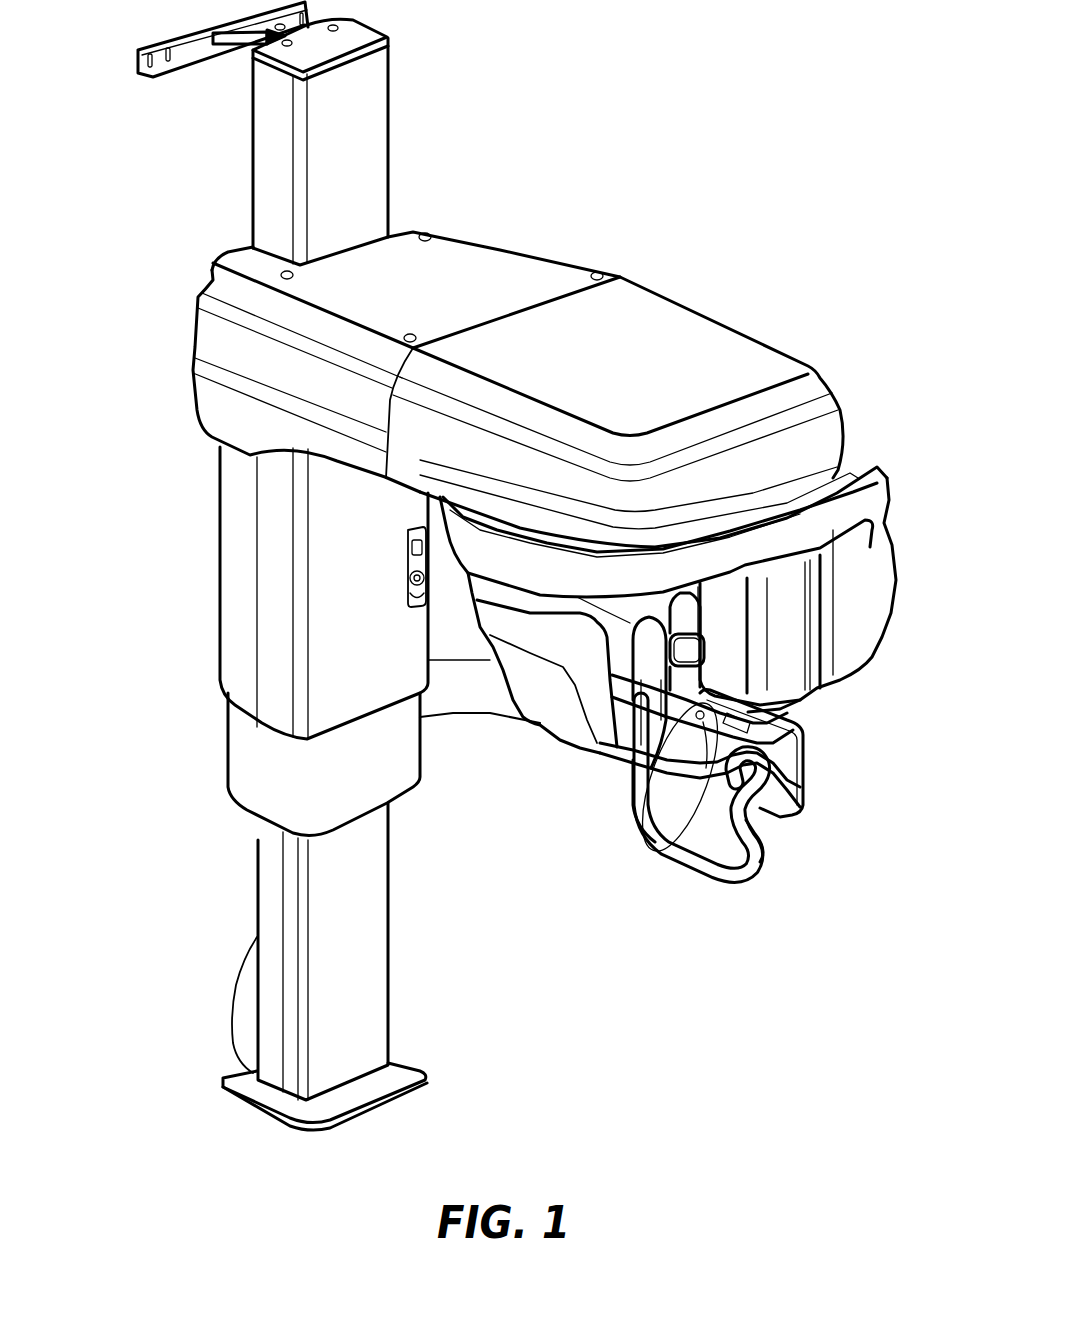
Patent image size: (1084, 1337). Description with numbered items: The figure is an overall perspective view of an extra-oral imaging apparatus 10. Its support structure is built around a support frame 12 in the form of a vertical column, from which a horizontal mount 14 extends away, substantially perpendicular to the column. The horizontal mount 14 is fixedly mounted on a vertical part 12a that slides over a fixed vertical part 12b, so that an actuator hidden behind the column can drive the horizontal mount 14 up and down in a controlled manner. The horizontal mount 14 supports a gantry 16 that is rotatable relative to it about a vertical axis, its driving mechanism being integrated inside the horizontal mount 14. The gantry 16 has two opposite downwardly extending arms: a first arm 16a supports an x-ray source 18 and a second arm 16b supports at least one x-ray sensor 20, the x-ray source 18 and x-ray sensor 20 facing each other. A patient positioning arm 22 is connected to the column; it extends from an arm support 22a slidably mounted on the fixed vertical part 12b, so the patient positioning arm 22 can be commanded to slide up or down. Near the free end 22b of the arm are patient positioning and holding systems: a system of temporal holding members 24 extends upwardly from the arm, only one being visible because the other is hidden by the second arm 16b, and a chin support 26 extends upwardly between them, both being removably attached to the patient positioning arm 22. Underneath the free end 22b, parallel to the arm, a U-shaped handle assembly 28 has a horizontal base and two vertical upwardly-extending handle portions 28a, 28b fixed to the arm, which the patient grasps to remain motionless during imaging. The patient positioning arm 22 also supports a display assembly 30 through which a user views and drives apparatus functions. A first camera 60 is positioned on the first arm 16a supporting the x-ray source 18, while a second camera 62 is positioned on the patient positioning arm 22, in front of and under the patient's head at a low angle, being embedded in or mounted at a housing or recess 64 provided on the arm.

The extra-oral imaging apparatus 10 is at (93, 1112).
The support frame 12 is at (188, 692).
The vertical part 12a is at (218, 594).
The fixed vertical part 12b is at (391, 874).
The horizontal mount 14 is at (641, 268).
The gantry 16 is at (878, 460).
The first arm 16a is at (888, 592).
The second arm 16b is at (475, 623).
The x-ray source 18 is at (813, 712).
The x-ray sensor 20 is at (560, 742).
The patient positioning arm 22 is at (490, 726).
The arm support 22a is at (228, 779).
The free end 22b is at (770, 763).
The temporal holding members 24 is at (650, 658).
The chin support 26 is at (645, 782).
The handle assembly 28 is at (686, 861).
The handle portion 28a is at (626, 808).
The handle portion 28b is at (768, 838).
The display assembly 30 is at (816, 774).
The first camera 60 is at (696, 653).
The second camera 62 is at (655, 848).
The housing or recess 64 is at (682, 767).